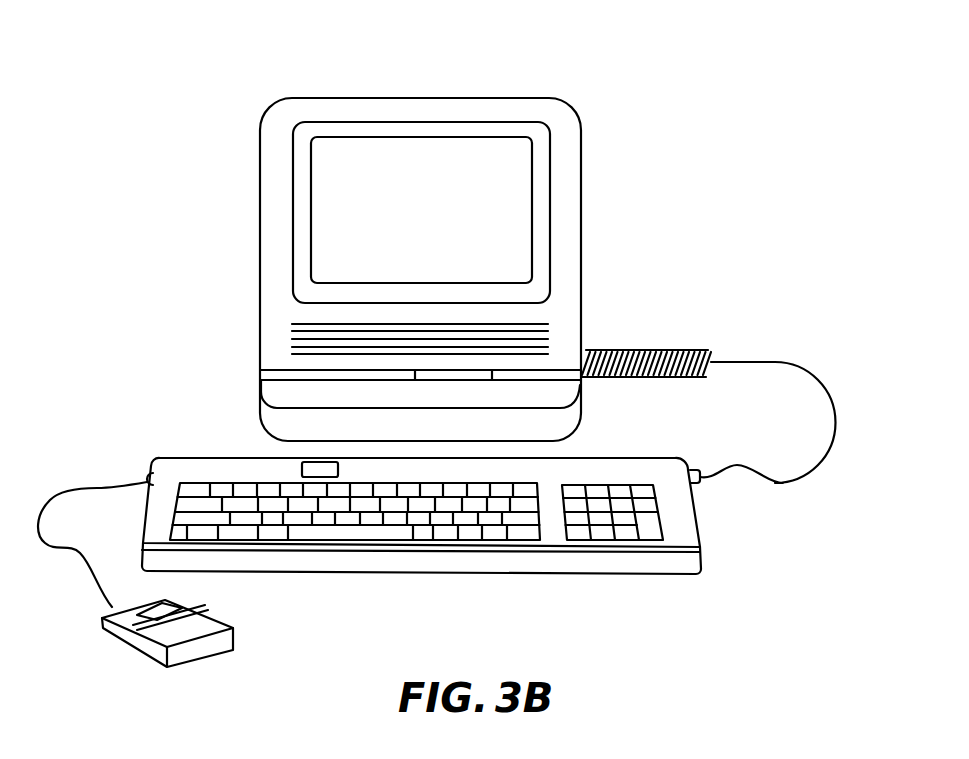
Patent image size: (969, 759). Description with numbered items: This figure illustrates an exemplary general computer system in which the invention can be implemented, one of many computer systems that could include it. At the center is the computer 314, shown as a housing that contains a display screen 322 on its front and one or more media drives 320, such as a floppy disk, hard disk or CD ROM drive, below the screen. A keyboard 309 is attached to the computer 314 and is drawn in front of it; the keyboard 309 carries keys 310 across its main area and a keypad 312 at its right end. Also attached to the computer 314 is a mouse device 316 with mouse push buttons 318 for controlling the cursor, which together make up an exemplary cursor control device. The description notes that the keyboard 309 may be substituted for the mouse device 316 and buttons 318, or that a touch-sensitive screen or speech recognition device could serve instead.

The keyboard 309 is at (692, 527).
The keys 310 is at (443, 530).
The keypad 312 is at (625, 535).
The computer 314 is at (582, 165).
The mouse device 316 is at (215, 650).
The mouse push button 318 is at (143, 612).
The media drive 320 is at (447, 375).
The display screen 322 is at (465, 157).